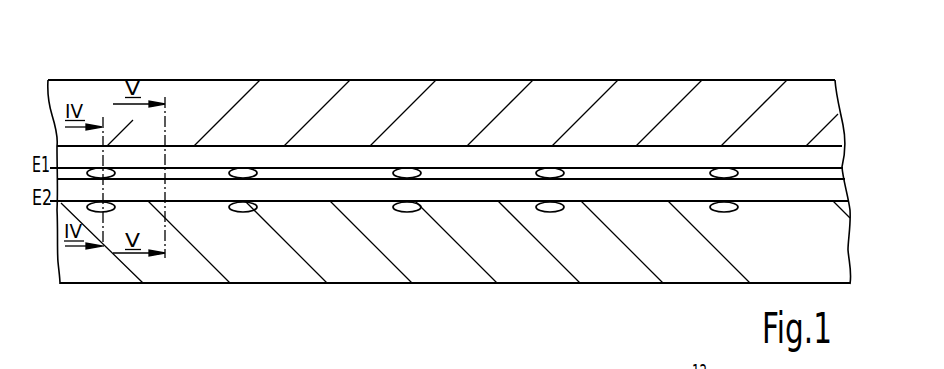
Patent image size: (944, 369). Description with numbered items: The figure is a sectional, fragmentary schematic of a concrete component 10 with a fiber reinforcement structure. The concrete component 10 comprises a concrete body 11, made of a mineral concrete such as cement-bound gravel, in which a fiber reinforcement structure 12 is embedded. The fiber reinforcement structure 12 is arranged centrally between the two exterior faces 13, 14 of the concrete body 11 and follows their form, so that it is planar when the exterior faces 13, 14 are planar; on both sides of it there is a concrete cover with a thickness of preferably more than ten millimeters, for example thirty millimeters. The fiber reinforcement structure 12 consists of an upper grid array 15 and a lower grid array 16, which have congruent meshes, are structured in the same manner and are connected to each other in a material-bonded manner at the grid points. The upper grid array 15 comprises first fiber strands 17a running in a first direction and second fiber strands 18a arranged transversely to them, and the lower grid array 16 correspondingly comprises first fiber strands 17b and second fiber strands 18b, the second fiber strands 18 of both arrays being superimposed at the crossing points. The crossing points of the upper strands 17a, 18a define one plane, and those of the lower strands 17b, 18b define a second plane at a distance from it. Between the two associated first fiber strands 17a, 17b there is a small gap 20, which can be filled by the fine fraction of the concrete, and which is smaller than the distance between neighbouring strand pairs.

The concrete component 10 is at (603, 52).
The concrete body 11 is at (658, 97).
The fiber reinforcement structure 12 is at (326, 146).
The exterior face 13 is at (418, 80).
The exterior face 14 is at (366, 283).
The upper grid array 15 is at (348, 157).
The lower grid array 16 is at (352, 183).
The first fiber strands 17a is at (672, 155).
The first fiber strands 17b is at (659, 188).
The second fiber strands 18 is at (504, 100).
The second fiber strands 18a is at (550, 172).
The second fiber strands 18b is at (553, 205).
The gap 20 is at (771, 167).